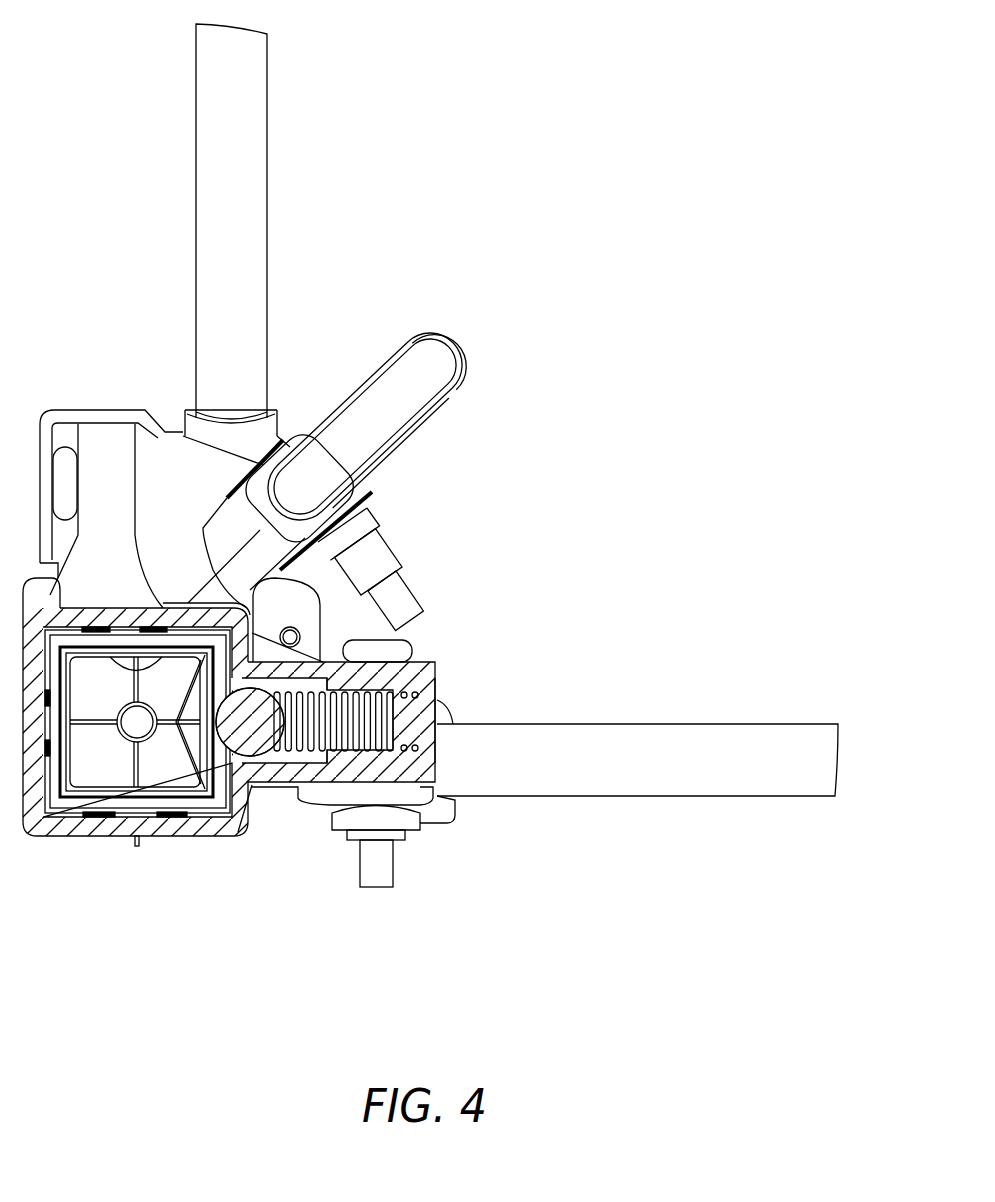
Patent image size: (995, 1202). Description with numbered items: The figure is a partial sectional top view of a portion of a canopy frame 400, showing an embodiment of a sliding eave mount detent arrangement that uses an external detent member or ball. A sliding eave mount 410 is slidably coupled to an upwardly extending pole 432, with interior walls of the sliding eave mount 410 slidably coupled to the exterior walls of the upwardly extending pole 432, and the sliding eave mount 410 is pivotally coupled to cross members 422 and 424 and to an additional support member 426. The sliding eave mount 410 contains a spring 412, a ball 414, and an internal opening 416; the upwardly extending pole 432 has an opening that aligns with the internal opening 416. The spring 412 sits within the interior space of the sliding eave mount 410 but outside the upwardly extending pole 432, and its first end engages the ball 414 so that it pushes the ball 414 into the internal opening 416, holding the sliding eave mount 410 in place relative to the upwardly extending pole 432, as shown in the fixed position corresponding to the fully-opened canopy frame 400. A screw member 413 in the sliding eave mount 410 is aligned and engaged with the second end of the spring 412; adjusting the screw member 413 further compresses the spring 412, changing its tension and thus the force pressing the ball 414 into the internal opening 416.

The canopy frame 400 is at (600, 272).
The sliding eave mount 410 is at (92, 850).
The spring 412 is at (347, 727).
The screw member 413 is at (427, 715).
The ball 414 is at (252, 740).
The internal opening 416 is at (162, 802).
The upwardly extending pole 432 is at (198, 738).
The cross member 422 is at (612, 727).
The cross member 424 is at (200, 305).
The additional support member 426 is at (390, 380).